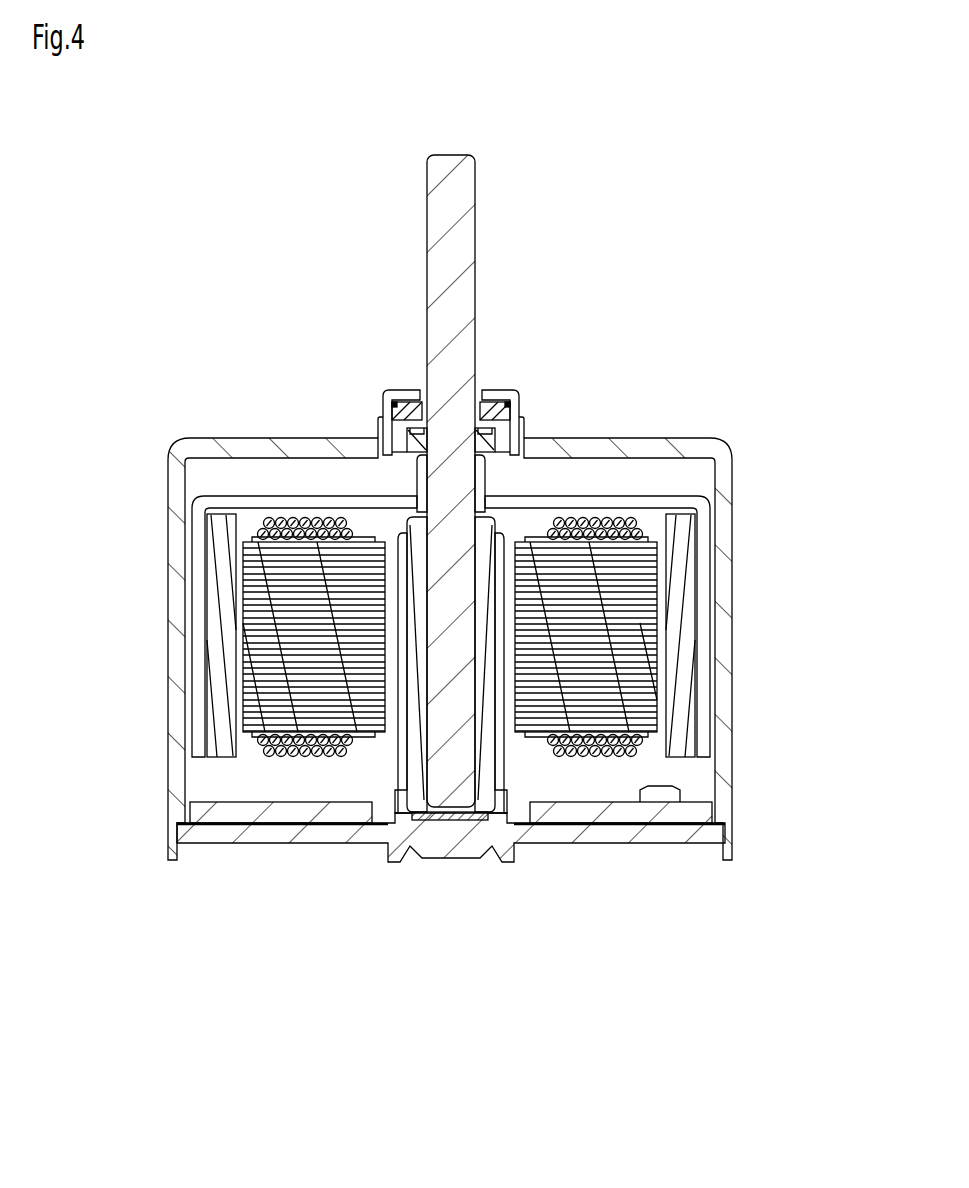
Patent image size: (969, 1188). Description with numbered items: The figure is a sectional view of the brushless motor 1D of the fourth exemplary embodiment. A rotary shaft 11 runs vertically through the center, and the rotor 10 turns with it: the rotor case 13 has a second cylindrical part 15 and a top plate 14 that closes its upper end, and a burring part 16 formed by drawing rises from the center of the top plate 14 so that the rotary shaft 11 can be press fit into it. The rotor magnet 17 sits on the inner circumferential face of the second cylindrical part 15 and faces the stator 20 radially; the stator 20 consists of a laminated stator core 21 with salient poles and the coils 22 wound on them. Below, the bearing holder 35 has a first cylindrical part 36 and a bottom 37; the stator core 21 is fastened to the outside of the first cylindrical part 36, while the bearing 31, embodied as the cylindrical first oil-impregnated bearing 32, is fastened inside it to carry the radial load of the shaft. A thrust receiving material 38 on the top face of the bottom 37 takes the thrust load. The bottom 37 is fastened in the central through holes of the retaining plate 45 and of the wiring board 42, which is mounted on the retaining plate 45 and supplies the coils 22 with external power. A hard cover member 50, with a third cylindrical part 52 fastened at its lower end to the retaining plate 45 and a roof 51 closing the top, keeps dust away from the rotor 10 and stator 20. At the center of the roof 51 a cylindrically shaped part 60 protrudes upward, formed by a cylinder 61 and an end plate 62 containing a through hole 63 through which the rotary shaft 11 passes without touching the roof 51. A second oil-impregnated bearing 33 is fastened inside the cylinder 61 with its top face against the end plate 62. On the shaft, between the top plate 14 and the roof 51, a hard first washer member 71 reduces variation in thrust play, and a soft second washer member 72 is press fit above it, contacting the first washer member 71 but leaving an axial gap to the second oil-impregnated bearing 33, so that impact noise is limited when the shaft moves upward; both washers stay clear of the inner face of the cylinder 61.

The brushless motor 1D is at (602, 294).
The rotor 10 is at (455, 555).
The rotary shaft 11 is at (442, 250).
The rotor case 13 is at (493, 577).
The top plate 14 is at (632, 503).
The second cylindrical part 15 is at (698, 587).
The burring part 16 is at (421, 470).
The rotor magnet 17 is at (222, 557).
The stator 20 is at (386, 651).
The stator core 21 is at (263, 704).
The coils 22 is at (272, 526).
The bearing 31 is at (474, 631).
The first oil-impregnated bearing 32 is at (406, 770).
The second oil-impregnated bearing 33 is at (507, 402).
The bearing holder 35 is at (418, 835).
The first cylindrical part 36 is at (506, 795).
The bottom 37 is at (451, 917).
The thrust receiving material 38 is at (476, 822).
The wiring board 42 is at (236, 814).
The retaining plate 45 is at (677, 833).
The cover member 50 is at (487, 598).
The roof 51 is at (280, 448).
The third cylindrical part 52 is at (722, 668).
The cylindrically shaped part 60 is at (411, 351).
The cylinder 61 is at (392, 404).
The end plate 62 is at (406, 398).
The through hole 63 is at (488, 396).
The first washer member 71 is at (524, 447).
The second washer member 72 is at (496, 433).